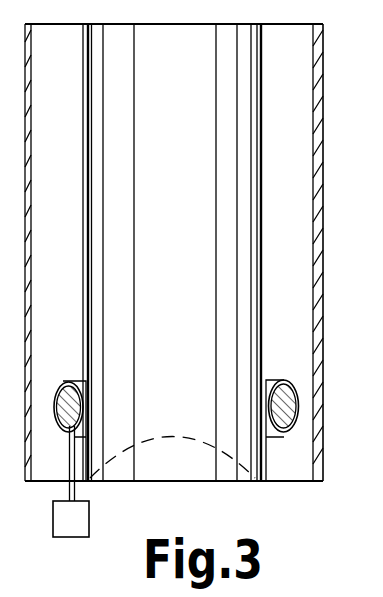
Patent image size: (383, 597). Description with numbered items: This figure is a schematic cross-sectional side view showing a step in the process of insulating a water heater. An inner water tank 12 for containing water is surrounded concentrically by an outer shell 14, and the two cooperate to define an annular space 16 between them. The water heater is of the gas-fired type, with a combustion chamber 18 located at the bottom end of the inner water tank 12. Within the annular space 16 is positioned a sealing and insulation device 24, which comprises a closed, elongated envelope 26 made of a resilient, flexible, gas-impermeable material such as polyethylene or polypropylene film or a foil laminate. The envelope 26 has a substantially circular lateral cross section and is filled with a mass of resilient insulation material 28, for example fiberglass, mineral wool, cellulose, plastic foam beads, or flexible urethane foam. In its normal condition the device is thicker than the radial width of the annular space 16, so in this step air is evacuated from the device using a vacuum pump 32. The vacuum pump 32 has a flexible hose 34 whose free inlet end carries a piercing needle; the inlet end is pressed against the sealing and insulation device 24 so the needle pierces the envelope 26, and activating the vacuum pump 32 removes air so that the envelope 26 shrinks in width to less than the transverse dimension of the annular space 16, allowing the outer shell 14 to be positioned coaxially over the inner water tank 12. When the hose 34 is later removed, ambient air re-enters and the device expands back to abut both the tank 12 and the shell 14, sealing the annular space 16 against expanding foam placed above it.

The inner water tank 12 is at (248, 113).
The outer shell 14 is at (323, 183).
The annular space 16 is at (283, 147).
The combustion chamber 18 is at (227, 487).
The sealing and insulation device 24 is at (73, 380).
The envelope 26 is at (283, 381).
The insulation material 28 is at (284, 434).
The vacuum pump 32 is at (86, 530).
The flexible hose 34 is at (68, 491).